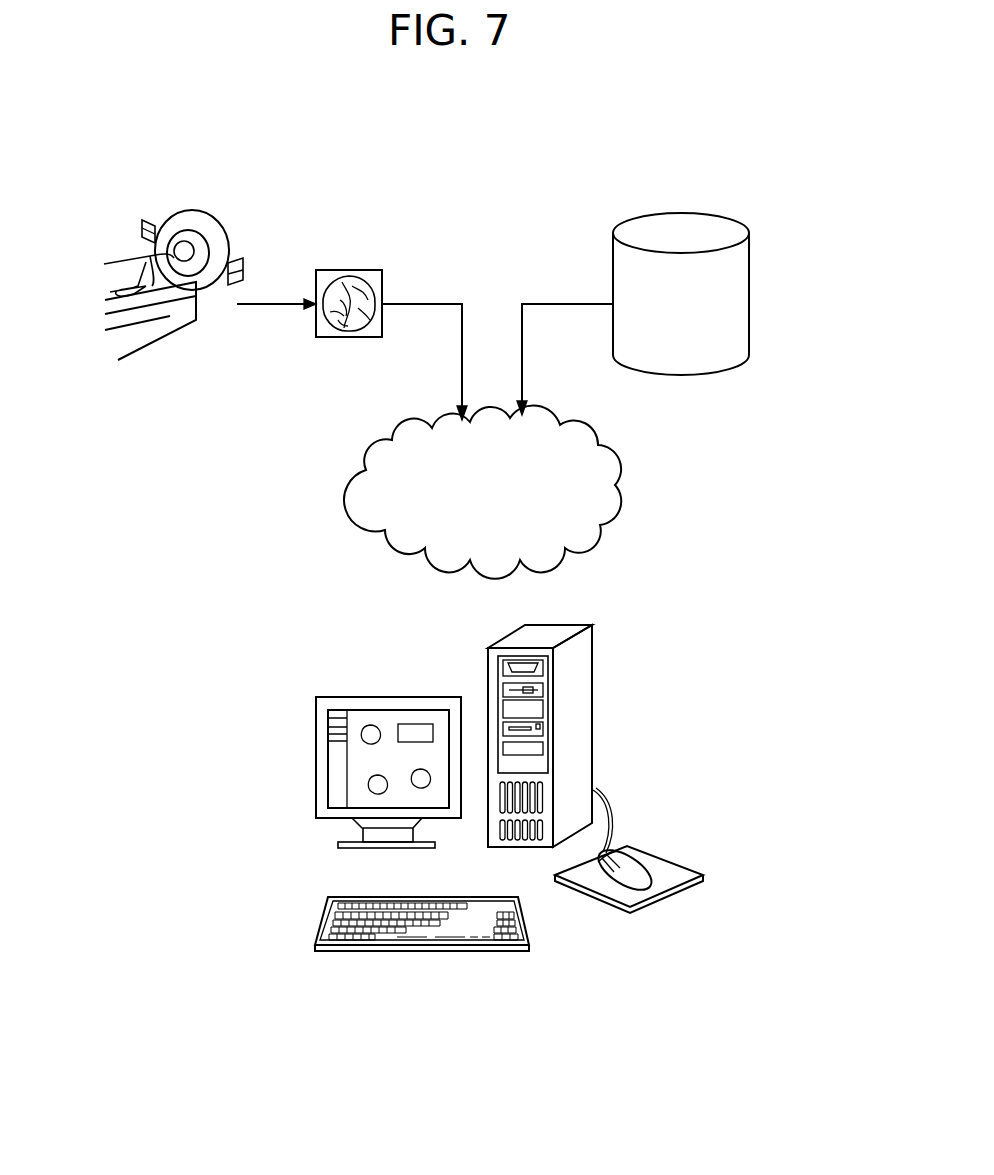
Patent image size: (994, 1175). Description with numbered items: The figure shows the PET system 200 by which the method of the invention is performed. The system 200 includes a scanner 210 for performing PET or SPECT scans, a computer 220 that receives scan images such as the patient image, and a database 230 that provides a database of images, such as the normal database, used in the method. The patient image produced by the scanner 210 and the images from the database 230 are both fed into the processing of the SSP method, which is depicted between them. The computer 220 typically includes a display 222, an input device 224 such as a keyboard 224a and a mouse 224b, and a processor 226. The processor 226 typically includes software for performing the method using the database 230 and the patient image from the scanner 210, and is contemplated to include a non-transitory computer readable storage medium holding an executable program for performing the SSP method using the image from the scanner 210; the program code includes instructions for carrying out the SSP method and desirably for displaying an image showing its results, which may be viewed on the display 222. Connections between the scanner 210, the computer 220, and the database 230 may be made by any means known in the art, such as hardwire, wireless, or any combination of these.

The PET system 200 is at (499, 160).
The scanner 210 is at (222, 228).
The computer 220 is at (298, 730).
The display 222 is at (316, 787).
The input device 224 is at (640, 810).
The keyboard 224a is at (416, 950).
The mouse 224b is at (648, 882).
The processor 226 is at (608, 700).
The database 230 is at (749, 268).